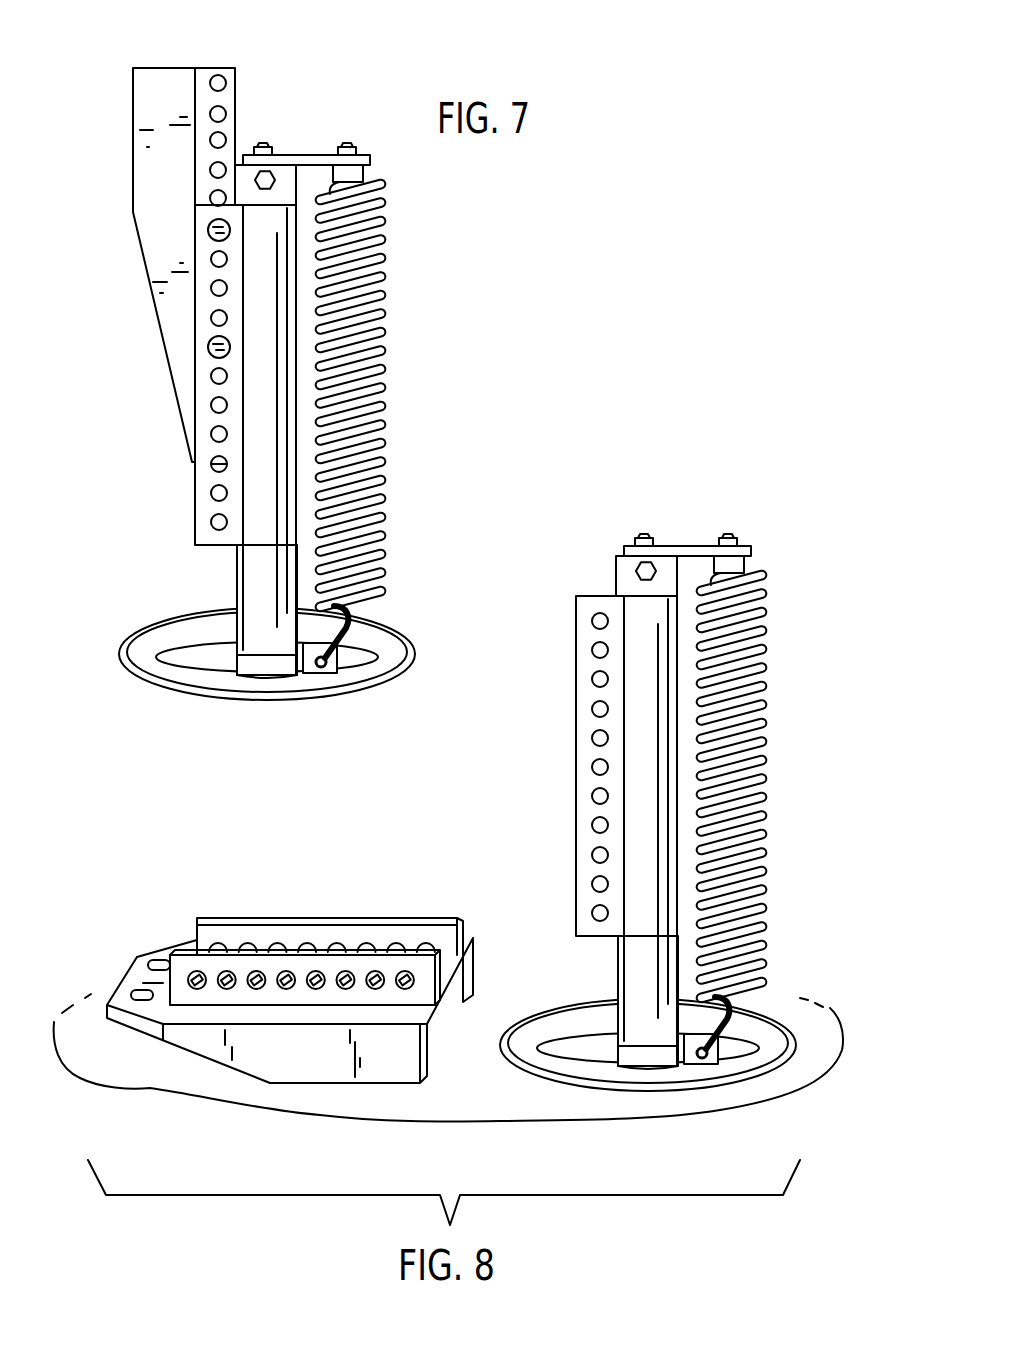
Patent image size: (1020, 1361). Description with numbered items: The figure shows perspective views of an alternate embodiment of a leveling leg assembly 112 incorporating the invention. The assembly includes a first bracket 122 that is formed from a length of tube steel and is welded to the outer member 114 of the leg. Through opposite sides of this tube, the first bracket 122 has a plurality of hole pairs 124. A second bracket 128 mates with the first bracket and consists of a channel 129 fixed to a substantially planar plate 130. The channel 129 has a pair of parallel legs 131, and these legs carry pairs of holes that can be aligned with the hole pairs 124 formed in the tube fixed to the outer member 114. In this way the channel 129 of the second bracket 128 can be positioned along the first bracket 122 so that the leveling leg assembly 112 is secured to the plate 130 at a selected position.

In FIG. 7, the leveling leg assembly 112 is at (231, 362).
In FIG. 8, the leveling leg assembly 112 is at (660, 766).
In FIG. 7, the outer member 114 is at (247, 578).
In FIG. 8, the outer member 114 is at (644, 612).
In FIG. 7, the first bracket 122 is at (205, 533).
In FIG. 8, the first bracket 122 is at (563, 736).
In FIG. 8, the hole pairs 124 is at (601, 678).
In FIG. 7, the second bracket 128 is at (288, 69).
In FIG. 8, the second bracket 128 is at (500, 915).
In FIG. 7, the channel 129 is at (253, 115).
In FIG. 8, the channel 129 is at (362, 929).
In FIG. 7, the plate 130 is at (172, 66).
In FIG. 8, the plate 130 is at (137, 972).
In FIG. 7, the parallel legs 131 is at (221, 140).
In FIG. 8, the parallel legs 131 is at (407, 975).